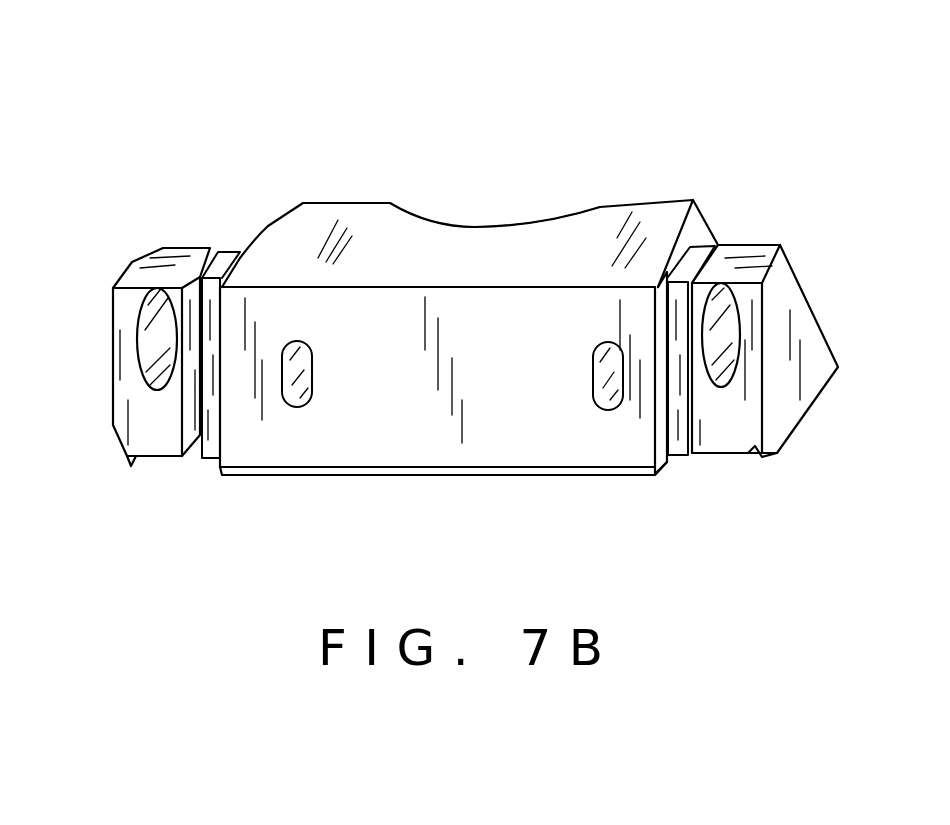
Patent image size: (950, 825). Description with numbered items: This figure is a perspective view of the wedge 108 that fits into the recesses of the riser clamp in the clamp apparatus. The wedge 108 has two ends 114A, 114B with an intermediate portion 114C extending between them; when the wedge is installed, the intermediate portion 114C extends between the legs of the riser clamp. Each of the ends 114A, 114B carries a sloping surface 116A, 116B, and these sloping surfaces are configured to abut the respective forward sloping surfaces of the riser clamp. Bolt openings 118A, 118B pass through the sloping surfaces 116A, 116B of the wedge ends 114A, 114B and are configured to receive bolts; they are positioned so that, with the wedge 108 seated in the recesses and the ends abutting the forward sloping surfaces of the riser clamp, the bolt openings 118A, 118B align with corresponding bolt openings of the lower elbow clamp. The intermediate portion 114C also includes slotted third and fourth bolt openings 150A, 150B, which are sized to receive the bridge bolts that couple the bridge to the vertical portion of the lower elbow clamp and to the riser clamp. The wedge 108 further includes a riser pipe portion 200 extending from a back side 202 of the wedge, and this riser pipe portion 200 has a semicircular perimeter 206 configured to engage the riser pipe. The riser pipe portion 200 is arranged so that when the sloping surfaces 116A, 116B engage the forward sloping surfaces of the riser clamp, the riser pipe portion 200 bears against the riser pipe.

The wedge 108 is at (434, 166).
The wedge end 114A is at (128, 362).
The wedge end 114B is at (774, 372).
The intermediate portion 114C is at (320, 258).
The sloping surface 116A is at (168, 445).
The sloping surface 116B is at (715, 438).
The bolt opening 118A is at (155, 329).
The bolt opening 118B is at (730, 357).
The slotted third bolt opening 150A is at (310, 398).
The slotted fourth bolt opening 150B is at (597, 400).
The riser pipe portion 200 is at (660, 220).
The back side 202 is at (482, 473).
The semicircular perimeter 206 is at (467, 226).